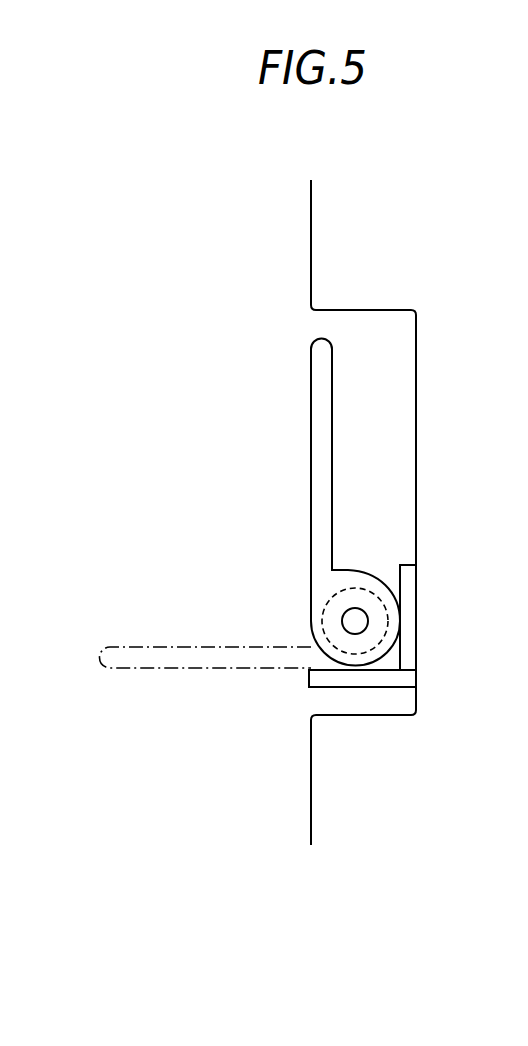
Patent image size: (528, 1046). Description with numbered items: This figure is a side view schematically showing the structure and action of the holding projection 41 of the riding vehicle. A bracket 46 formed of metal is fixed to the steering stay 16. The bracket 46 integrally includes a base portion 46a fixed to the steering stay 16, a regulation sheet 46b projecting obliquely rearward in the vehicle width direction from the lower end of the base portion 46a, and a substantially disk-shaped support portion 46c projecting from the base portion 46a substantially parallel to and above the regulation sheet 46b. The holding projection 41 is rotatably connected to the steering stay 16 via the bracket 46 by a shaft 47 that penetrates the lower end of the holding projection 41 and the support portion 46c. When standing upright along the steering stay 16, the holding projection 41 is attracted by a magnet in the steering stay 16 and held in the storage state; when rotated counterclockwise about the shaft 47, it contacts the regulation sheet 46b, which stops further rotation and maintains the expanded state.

The steering stay 16 is at (311, 238).
The holding projection 41 is at (311, 450).
The bracket 46 is at (408, 580).
The base portion 46a is at (417, 622).
The regulation sheet 46b is at (357, 690).
The support portion 46c is at (355, 578).
The shaft 47 is at (352, 620).